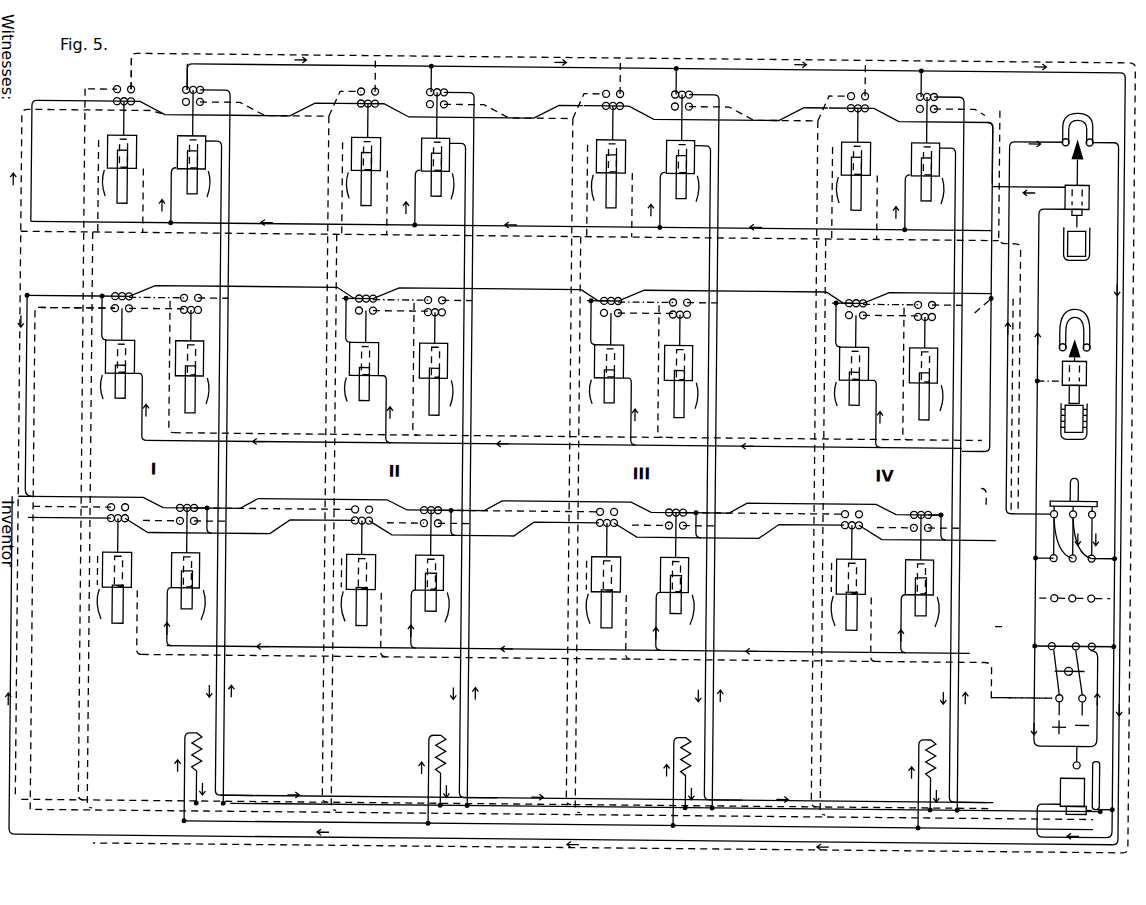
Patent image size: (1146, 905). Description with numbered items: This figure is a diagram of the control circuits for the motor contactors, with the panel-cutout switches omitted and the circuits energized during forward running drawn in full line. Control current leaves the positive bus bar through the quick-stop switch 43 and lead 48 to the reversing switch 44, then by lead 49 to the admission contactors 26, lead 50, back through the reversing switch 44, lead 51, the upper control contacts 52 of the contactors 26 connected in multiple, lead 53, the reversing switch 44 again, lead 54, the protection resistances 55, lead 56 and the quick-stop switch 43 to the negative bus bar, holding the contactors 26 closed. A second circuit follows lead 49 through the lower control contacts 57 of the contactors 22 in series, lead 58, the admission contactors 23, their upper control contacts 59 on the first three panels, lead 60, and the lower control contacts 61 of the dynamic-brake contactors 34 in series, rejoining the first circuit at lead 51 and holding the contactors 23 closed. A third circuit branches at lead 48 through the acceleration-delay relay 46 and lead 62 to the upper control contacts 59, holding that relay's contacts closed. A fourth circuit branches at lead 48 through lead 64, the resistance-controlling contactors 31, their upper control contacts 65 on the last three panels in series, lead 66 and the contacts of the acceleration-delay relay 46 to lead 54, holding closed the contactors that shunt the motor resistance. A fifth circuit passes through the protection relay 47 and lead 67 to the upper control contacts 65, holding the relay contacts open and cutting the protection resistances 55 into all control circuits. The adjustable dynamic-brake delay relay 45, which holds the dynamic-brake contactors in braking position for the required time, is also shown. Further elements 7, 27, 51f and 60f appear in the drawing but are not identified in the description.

The conductor 7 is at (16, 645).
The contactor 22 is at (482, 156).
The admission contactor 23 is at (480, 364).
The admission contactor 26 is at (565, 151).
The solenoid 27 is at (563, 358).
The resistance-controlling contactor 31 is at (560, 572).
The dynamic-brake contactor 34 is at (481, 586).
The quick-stop switch 43 is at (1040, 692).
The reversing switch 44 is at (1080, 493).
The dynamic-brake delay relay 45 is at (1089, 376).
The acceleration-delay relay 46 is at (1090, 192).
The protection relay 47 is at (1069, 777).
The lead 48 is at (1043, 635).
The lead 49 is at (798, 228).
The lead 50 is at (220, 240).
The lead 51 is at (1003, 618).
The conductor 51f is at (233, 240).
The upper control contacts 52 is at (568, 90).
The lead 53 is at (1124, 76).
The lead 54 is at (1110, 598).
The protection resistances 55 is at (204, 738).
The lead 56 is at (1101, 721).
The lower control contacts 57 is at (501, 101).
The lead 58 is at (994, 130).
The upper control contacts 59 is at (131, 293).
The lead 60 is at (29, 338).
The conductor 60f is at (72, 558).
The lower control contacts 61 is at (131, 522).
The lead 62 is at (1024, 179).
The lead 64 is at (748, 650).
The upper control contacts 65 is at (188, 504).
The lead 66 is at (998, 482).
The lead 67 is at (1033, 836).